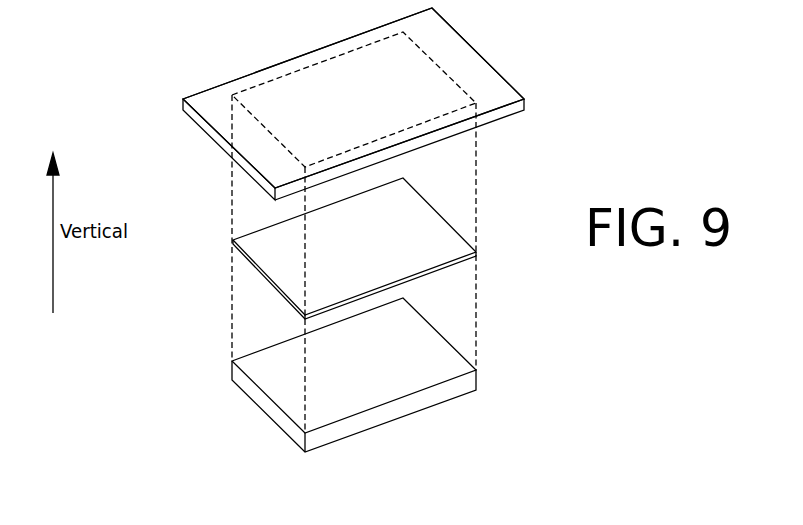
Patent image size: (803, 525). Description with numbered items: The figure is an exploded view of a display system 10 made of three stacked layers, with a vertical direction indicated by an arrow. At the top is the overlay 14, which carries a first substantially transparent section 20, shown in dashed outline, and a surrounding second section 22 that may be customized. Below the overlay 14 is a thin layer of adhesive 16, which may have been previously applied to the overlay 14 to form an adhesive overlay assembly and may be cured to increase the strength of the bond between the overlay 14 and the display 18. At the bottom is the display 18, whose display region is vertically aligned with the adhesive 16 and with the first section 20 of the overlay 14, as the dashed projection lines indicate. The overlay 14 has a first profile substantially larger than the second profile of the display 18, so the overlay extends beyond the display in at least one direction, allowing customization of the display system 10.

The display system 10 is at (178, 42).
The overlay 14 is at (477, 53).
The adhesive 16 is at (432, 204).
The display 18 is at (432, 328).
The first substantially transparent section 20 is at (366, 109).
The second section 22 is at (269, 155).